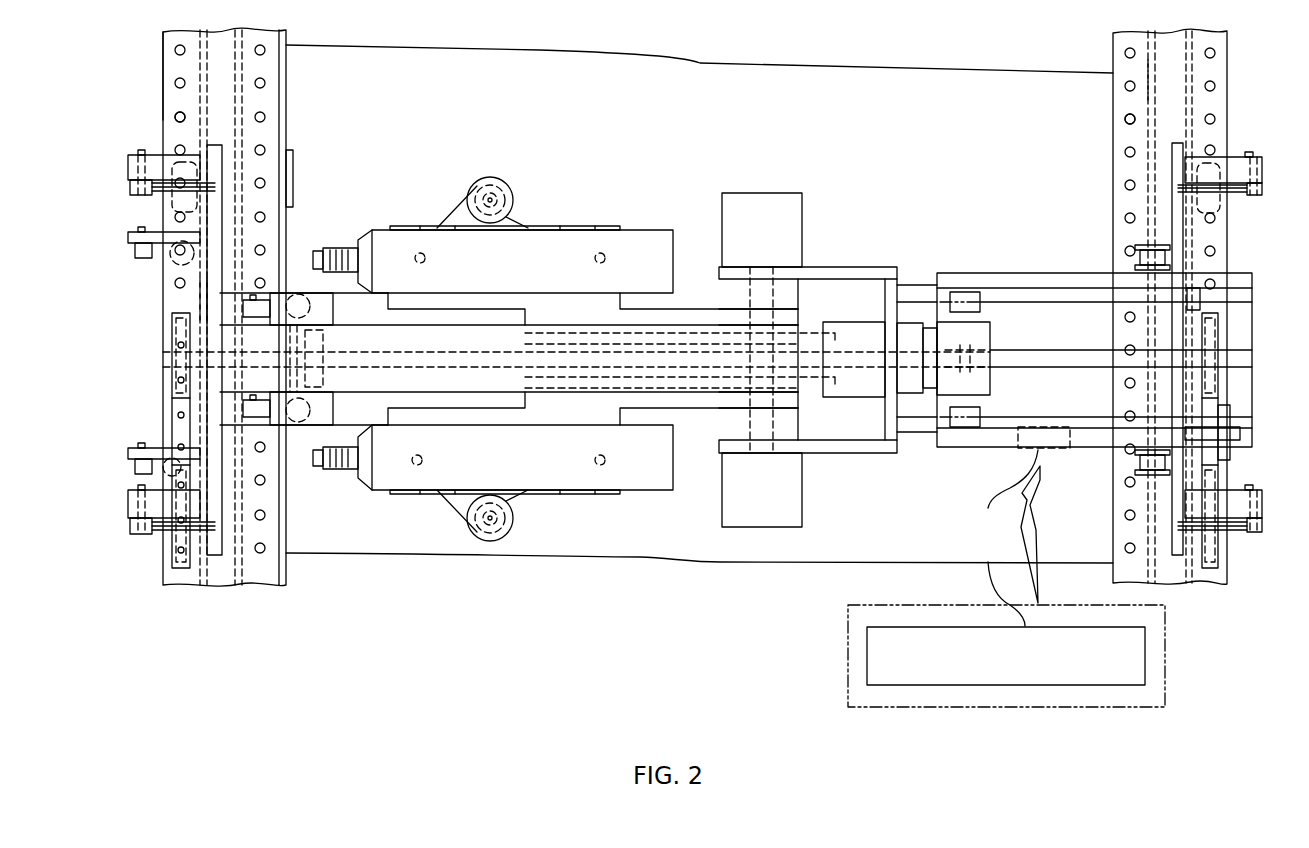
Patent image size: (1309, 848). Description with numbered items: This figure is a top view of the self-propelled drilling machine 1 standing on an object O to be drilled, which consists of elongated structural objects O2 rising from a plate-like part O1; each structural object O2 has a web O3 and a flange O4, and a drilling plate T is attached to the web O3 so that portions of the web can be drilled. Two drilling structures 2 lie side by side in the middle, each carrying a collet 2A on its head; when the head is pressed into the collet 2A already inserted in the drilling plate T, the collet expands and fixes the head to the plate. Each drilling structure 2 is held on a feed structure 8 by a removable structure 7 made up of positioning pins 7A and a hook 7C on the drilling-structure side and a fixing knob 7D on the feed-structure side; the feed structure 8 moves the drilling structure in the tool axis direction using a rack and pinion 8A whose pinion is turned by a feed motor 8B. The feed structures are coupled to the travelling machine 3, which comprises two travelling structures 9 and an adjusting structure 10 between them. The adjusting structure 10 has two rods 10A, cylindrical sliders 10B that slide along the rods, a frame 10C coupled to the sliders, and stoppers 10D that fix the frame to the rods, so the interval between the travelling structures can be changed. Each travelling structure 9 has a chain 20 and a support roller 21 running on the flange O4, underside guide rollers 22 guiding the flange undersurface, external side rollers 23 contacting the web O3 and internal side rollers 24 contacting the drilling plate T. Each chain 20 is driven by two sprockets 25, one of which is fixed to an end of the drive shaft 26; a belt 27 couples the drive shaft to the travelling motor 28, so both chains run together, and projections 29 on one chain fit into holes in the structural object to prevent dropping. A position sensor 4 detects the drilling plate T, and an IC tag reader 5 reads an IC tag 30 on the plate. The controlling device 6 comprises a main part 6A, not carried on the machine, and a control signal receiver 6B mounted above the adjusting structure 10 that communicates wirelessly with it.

The drilling machine 1 is at (893, 62).
The object to be drilled O is at (163, 48).
The plate-like part O1 is at (573, 80).
The elongated structural object O2 is at (163, 95).
The web O3 is at (205, 300).
The flange O4 is at (183, 128).
The drilling plate T is at (288, 567).
The drilling structure 2 is at (652, 495).
The collet 2A is at (340, 470).
The travelling machine 3 is at (168, 323).
The position sensor 4 is at (300, 425).
The IC tag reader 5 is at (325, 387).
The controlling device 6 is at (963, 562).
The main part 6A is at (1008, 546).
The control signal receiver 6B is at (1023, 481).
The removable structure 7 is at (487, 542).
The positioning pin 7A is at (600, 466).
The hook 7C is at (497, 540).
The fixing knob 7D is at (512, 520).
The feed structure 8 is at (735, 530).
The rack and pinion 8A is at (810, 395).
The feed motor 8B is at (770, 530).
The travelling structure 9 is at (168, 348).
The adjusting structure 10 is at (975, 272).
The rod 10A is at (1085, 416).
The cylindrical slider 10B is at (1195, 432).
The frame 10C is at (1045, 273).
The stopper 10D is at (1130, 462).
The chain 20 is at (180, 405).
The support roller 21 is at (262, 186).
The underside guide roller 22 is at (165, 530).
The external side roller 23 is at (165, 450).
The internal side roller 24 is at (298, 423).
The sprocket 25 is at (163, 550).
The drive shaft 26 is at (1100, 352).
The belt 27 is at (960, 360).
The travelling motor 28 is at (845, 322).
The projection 29 is at (180, 416).
The IC tag 30 is at (290, 207).